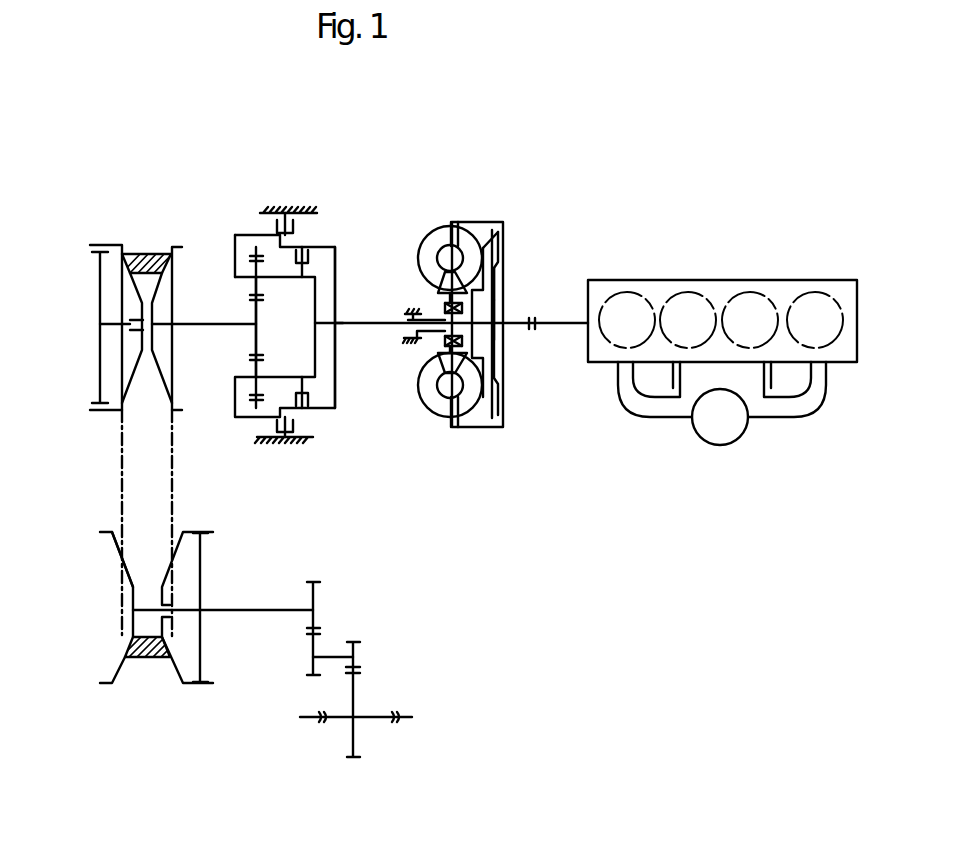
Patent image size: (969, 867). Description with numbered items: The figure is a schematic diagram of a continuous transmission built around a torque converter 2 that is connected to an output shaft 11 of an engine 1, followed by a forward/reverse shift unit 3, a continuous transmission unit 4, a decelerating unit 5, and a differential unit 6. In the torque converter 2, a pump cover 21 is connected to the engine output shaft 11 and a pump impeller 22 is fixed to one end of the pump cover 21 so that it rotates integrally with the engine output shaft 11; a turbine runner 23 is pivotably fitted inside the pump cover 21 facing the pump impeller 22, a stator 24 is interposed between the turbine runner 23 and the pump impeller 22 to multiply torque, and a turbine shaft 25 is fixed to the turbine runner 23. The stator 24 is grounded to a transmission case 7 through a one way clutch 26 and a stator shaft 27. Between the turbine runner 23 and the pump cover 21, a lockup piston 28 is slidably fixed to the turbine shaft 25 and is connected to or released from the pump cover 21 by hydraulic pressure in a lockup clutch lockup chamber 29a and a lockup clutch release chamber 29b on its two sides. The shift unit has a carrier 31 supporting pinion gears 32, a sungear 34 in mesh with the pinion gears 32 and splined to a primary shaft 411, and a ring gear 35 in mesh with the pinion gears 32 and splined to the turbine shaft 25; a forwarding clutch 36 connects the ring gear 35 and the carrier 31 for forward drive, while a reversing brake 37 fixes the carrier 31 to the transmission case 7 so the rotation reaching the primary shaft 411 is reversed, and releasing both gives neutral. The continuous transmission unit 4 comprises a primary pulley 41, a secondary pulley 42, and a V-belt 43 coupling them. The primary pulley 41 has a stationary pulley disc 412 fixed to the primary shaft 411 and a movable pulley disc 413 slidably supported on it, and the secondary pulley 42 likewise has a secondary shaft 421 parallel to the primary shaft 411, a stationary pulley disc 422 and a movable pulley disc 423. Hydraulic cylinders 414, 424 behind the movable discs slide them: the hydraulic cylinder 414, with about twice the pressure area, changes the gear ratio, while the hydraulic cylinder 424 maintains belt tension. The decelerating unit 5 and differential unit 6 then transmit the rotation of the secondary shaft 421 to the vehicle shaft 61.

The engine 1 is at (757, 272).
The engine output shaft 11 is at (578, 318).
The torque converter 2 is at (470, 218).
The pump cover 21 is at (492, 280).
The pump impeller 22 is at (446, 242).
The turbine runner 23 is at (474, 235).
The stator 24 is at (435, 283).
The turbine shaft 25 is at (493, 330).
The one way clutch 26 is at (445, 305).
The stator shaft 27 is at (406, 315).
The lockup piston 28 is at (495, 245).
The lockup clutch lockup chamber 29a is at (495, 285).
The lockup clutch release chamber 29b is at (495, 320).
The forward/reverse shift unit 3 is at (334, 205).
The carrier 31 is at (318, 283).
The pinion gears 32 is at (256, 262).
The sungear 34 is at (256, 340).
The ring gear 35 is at (248, 264).
The forwarding clutch 36 is at (318, 250).
The reversing brake 37 is at (290, 210).
The transmission case 7 is at (410, 340).
The continuous transmission unit 4 is at (64, 255).
The primary pulley 41 is at (80, 383).
The primary shaft 411 is at (190, 395).
The stationary pulley disc 412 is at (168, 285).
The movable pulley disc 413 is at (89, 247).
The hydraulic cylinder 414 is at (103, 312).
The secondary pulley 42 is at (80, 540).
The secondary shaft 421 is at (247, 613).
The stationary pulley disc 422 is at (115, 552).
The movable pulley disc 423 is at (214, 530).
The hydraulic cylinder 424 is at (188, 688).
The V-belt 43 is at (148, 660).
The decelerating unit 5 is at (370, 652).
The differential unit 6 is at (380, 735).
The vehicle shaft 61 is at (410, 714).